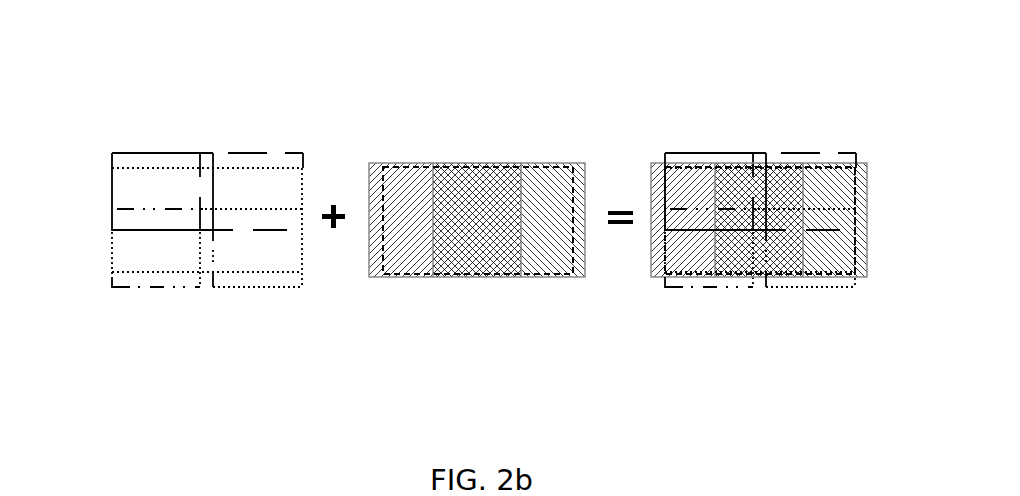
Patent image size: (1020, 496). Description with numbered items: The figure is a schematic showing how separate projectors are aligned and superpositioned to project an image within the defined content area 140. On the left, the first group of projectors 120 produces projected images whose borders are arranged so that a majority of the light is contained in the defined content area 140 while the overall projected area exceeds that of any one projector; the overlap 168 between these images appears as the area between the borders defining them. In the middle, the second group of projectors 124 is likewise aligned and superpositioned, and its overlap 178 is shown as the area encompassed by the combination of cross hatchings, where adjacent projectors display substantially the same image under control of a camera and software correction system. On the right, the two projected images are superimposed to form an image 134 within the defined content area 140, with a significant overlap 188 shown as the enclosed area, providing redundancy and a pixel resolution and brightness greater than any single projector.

The first group of projectors 120 is at (97, 288).
The second group of projectors 124 is at (477, 229).
The image 134 is at (775, 186).
The defined content area 140 is at (222, 165).
The overlap 168 is at (131, 223).
The overlap 178 is at (490, 195).
The overlap 188 is at (842, 212).